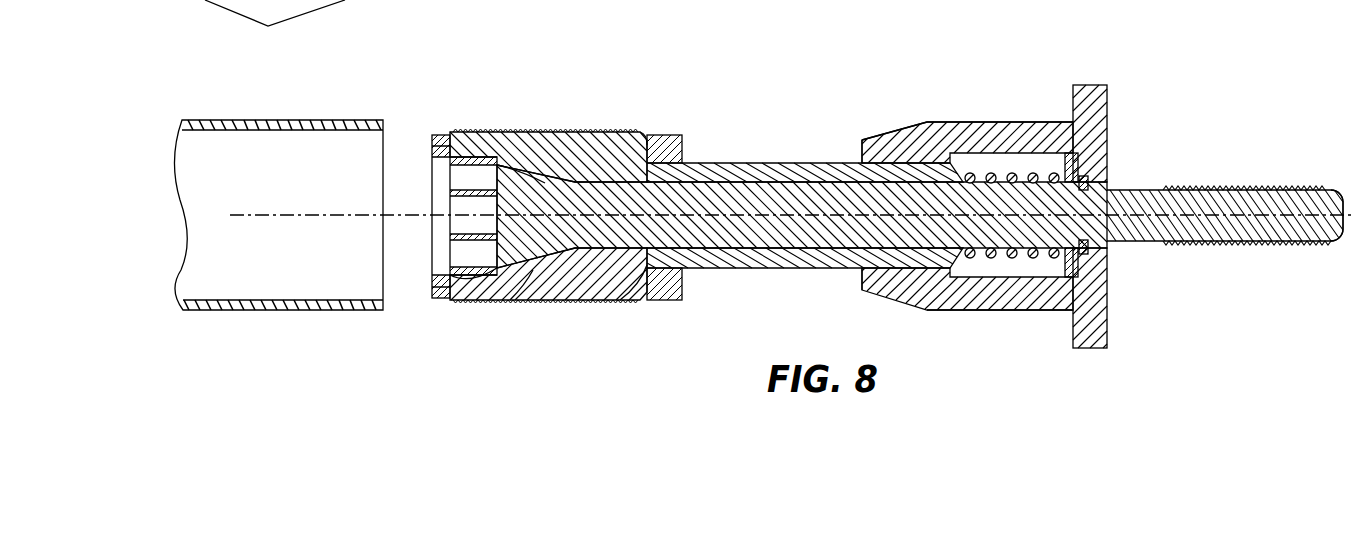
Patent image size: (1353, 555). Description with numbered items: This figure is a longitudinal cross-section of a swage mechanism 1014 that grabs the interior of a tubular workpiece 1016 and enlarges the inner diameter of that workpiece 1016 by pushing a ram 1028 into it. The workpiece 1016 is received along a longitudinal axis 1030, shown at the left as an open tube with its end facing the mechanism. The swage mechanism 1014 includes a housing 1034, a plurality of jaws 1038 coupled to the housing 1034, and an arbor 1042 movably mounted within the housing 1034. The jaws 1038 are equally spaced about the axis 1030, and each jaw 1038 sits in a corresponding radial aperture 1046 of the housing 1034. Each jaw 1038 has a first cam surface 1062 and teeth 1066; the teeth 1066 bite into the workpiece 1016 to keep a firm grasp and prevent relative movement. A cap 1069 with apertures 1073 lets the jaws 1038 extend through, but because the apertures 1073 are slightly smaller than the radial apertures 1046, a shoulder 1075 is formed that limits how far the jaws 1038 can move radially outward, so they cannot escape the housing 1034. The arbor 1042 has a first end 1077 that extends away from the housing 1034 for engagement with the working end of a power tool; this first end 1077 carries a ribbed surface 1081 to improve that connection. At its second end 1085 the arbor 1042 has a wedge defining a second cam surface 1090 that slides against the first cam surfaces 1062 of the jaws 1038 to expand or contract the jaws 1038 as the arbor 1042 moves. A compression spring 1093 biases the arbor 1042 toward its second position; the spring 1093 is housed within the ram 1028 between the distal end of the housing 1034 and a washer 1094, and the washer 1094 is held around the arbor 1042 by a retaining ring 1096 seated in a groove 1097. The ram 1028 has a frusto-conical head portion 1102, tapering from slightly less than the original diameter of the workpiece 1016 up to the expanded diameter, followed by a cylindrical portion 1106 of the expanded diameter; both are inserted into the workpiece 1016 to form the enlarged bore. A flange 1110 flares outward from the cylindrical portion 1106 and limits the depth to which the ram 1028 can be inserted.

The swage mechanism 1014 is at (864, 56).
The workpiece 1016 is at (312, 122).
The ram 1028 is at (993, 115).
The longitudinal axis 1030 is at (1273, 237).
The housing 1034 is at (776, 155).
The jaws 1038 is at (577, 125).
The arbor 1042 is at (727, 174).
The radial aperture 1046 is at (628, 302).
The first cam surface 1062 is at (517, 178).
The teeth 1066 is at (475, 303).
The cap 1069 is at (668, 307).
The apertures 1073 is at (622, 130).
The shoulder 1075 is at (440, 128).
The first end 1077 is at (1322, 190).
The ribbed surface 1081 is at (1207, 190).
The second end 1085 is at (487, 208).
The second cam surface 1090 is at (533, 302).
The compression spring 1093 is at (1046, 258).
The washer 1094 is at (1080, 156).
The retaining ring 1096 is at (1092, 178).
The groove 1097 is at (1088, 240).
The frusto-conical head portion 1102 is at (888, 298).
The cylindrical portion 1106 is at (982, 312).
The flange 1110 is at (1092, 348).